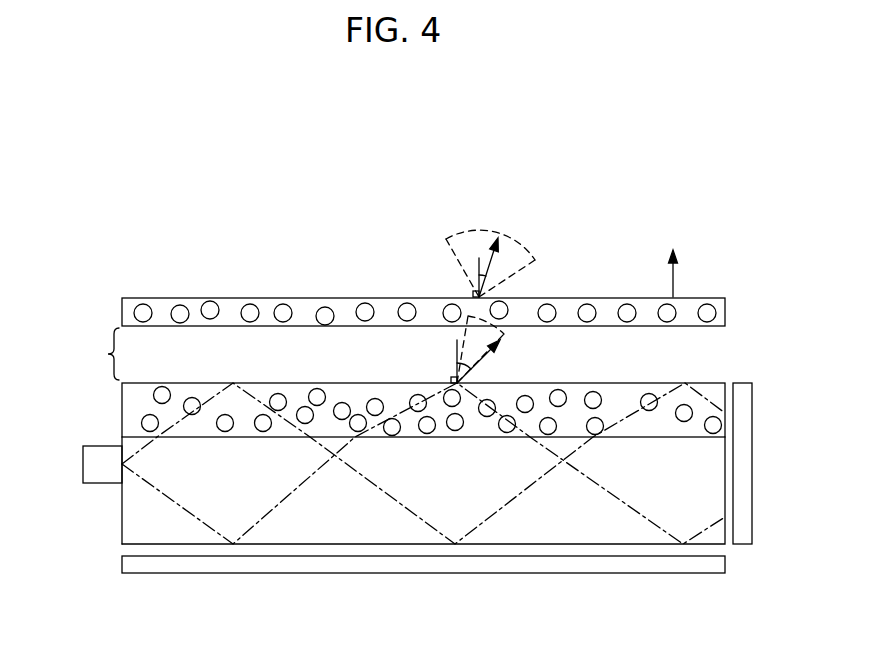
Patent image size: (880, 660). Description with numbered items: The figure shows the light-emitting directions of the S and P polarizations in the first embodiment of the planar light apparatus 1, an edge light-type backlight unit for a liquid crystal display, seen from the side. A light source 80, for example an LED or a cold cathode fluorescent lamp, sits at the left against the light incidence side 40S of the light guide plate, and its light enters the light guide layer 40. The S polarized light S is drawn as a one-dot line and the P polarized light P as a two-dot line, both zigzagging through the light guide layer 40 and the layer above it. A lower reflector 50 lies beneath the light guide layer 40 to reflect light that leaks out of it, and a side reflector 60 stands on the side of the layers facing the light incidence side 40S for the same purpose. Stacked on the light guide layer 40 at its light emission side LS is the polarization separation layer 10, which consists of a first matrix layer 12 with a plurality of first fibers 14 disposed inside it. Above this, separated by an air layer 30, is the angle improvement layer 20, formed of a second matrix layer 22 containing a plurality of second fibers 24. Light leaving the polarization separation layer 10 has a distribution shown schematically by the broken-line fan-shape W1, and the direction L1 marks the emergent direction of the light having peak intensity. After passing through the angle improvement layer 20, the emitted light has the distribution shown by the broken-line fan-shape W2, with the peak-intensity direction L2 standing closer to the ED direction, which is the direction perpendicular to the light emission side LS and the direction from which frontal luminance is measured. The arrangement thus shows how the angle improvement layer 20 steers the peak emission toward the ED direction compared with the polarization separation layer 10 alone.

The planar light apparatus 1 is at (108, 213).
The polarization separation layer 10 is at (107, 407).
The first matrix layer 12 is at (197, 390).
The first fibers 14 is at (163, 386).
The angle improvement layer 20 is at (107, 303).
The second matrix layer 22 is at (300, 304).
The second fibers 24 is at (250, 304).
The air layer 30 is at (98, 354).
The light guide layer 40 is at (167, 538).
The light incidence side 40S is at (121, 521).
The lower reflector 50 is at (665, 574).
The side reflector 60 is at (742, 383).
The light source 80 is at (83, 462).
The S polarized light S is at (423, 463).
The P polarized light P is at (423, 463).
The direction L1 is at (486, 361).
The direction L2 is at (497, 253).
The fan-shape W1 is at (505, 334).
The fan-shape W2 is at (522, 259).
The ED direction ED is at (660, 258).
The light emission side LS is at (704, 297).